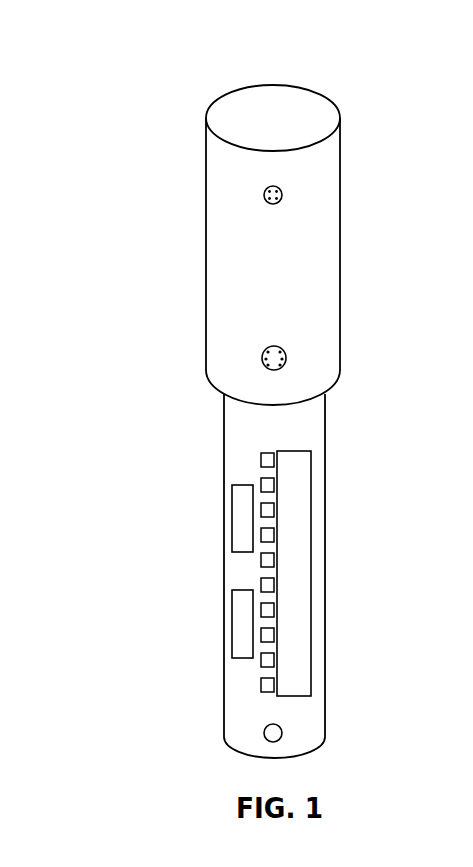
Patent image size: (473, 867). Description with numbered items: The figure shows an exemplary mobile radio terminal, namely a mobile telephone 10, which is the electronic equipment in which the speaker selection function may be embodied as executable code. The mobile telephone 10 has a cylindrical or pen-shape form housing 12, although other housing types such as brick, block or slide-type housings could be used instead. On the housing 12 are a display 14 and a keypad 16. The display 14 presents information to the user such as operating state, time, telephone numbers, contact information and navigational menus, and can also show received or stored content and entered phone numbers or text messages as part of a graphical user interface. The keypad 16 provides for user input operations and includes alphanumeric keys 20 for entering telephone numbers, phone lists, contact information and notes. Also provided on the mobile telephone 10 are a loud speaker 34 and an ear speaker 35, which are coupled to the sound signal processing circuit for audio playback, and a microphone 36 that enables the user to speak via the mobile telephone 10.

The mobile telephone 10 is at (153, 81).
The housing 12 is at (224, 455).
The display 14 is at (306, 572).
The keypad 16 is at (152, 504).
The alphanumeric keys 20 is at (261, 578).
The loud speaker 34 is at (284, 352).
The ear speaker 35 is at (283, 189).
The microphone 36 is at (282, 729).